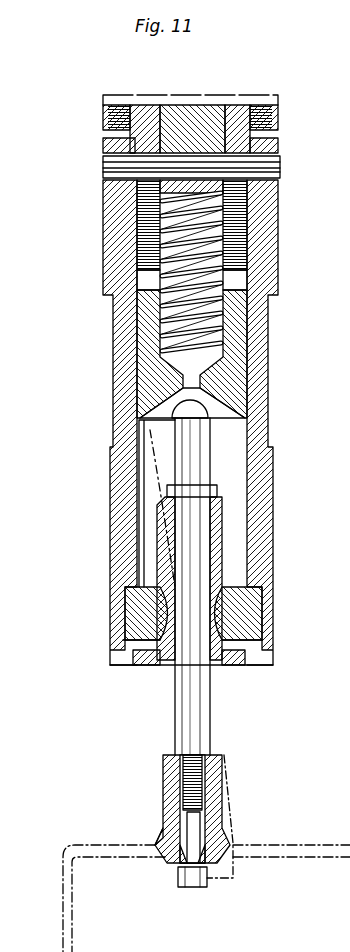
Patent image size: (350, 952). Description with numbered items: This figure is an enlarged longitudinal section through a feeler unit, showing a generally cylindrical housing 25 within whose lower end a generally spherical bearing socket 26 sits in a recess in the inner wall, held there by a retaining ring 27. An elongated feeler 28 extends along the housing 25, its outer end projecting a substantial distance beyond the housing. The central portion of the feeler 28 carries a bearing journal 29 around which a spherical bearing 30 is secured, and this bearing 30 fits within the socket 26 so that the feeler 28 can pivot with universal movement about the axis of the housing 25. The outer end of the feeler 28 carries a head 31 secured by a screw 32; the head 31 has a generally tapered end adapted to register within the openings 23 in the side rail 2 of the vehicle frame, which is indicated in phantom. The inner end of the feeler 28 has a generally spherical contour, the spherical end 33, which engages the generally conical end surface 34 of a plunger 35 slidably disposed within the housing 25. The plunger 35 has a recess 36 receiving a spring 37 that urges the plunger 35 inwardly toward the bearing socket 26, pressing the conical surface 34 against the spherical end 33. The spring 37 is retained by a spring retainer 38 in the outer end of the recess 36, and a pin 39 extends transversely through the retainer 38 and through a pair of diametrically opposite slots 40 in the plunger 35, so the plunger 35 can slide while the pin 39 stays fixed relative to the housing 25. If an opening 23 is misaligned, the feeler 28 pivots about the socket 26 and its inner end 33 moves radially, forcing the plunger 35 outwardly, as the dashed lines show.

The side rail 2 is at (273, 845).
The openings 23 is at (160, 848).
The housing 25 is at (272, 516).
The bearing socket 26 is at (255, 600).
The retaining ring 27 is at (255, 667).
The feeler 28 is at (213, 728).
The bearing journal 29 is at (222, 568).
The spherical bearing 30 is at (150, 602).
The head 31 is at (222, 812).
The screw 32 is at (205, 888).
The spherical end 33 is at (205, 420).
The conical end surface 34 is at (138, 428).
The plunger 35 is at (240, 377).
The recess 36 is at (220, 327).
The spring 37 is at (213, 275).
The spring retainer 38 is at (215, 104).
The pin 39 is at (275, 164).
The slots 40 is at (242, 218).